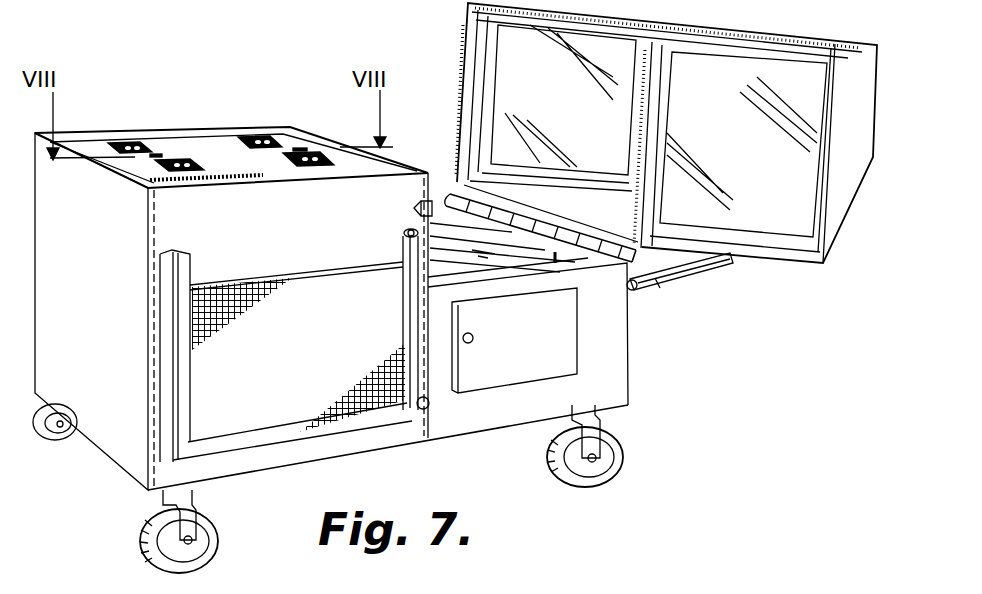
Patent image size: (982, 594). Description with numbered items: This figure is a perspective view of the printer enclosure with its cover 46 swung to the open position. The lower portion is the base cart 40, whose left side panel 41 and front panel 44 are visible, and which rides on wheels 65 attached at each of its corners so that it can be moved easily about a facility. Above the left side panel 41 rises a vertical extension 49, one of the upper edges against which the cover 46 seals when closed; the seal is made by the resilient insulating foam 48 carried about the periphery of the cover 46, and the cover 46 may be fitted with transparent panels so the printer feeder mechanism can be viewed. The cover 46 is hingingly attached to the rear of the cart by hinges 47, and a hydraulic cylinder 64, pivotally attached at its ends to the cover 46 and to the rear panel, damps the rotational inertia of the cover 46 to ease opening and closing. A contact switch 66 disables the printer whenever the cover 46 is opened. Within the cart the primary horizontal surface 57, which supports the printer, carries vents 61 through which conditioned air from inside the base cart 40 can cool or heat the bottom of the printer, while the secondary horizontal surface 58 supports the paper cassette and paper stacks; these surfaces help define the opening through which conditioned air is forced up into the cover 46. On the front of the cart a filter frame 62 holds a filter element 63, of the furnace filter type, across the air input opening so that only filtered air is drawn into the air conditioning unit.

The base cart 40 is at (440, 483).
The left side panel 41 is at (177, 225).
The front panel 44 is at (118, 468).
The cover 46 is at (873, 45).
The hinges 47 is at (657, 293).
The resilient insulating foam 48 is at (468, 12).
The vertical extension of left side panel 49 is at (438, 372).
The primary horizontal surface 57 is at (217, 140).
The secondary horizontal surface 58 is at (440, 223).
The vents 61 is at (262, 140).
The filter frame 62 is at (183, 337).
The filter element 63 is at (313, 387).
The hydraulic cylinder 64 is at (685, 283).
The wheels 65 is at (623, 460).
The contact switch 66 is at (567, 277).